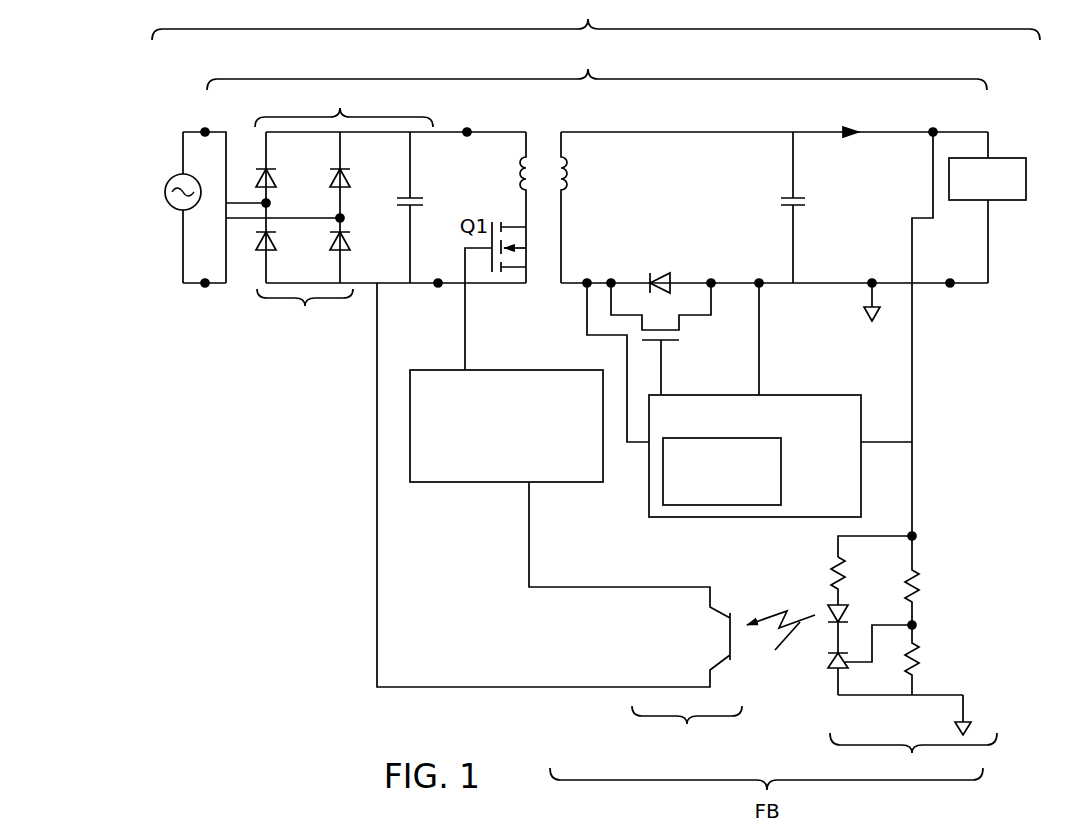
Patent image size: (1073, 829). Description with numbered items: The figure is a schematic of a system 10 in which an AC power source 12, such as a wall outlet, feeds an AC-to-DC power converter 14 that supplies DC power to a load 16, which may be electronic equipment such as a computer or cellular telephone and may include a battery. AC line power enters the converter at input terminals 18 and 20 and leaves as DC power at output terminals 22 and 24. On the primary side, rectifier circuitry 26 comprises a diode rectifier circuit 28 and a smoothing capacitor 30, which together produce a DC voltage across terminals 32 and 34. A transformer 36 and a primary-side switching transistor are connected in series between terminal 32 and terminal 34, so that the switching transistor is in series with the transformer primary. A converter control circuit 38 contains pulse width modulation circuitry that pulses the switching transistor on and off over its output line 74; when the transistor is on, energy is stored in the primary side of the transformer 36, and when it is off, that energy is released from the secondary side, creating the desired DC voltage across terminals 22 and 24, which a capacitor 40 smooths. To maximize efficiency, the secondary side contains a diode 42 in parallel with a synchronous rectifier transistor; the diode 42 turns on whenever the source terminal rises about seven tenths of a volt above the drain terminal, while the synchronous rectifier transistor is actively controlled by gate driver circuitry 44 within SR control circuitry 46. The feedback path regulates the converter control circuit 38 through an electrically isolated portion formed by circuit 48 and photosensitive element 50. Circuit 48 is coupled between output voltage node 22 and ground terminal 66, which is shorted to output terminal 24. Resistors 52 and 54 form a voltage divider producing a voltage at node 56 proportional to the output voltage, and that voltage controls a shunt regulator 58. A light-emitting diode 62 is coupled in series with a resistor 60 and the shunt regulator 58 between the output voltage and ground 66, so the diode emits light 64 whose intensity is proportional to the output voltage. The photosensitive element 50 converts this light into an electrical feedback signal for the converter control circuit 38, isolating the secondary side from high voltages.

The system 10 is at (596, 20).
The AC power source 12 is at (170, 206).
The AC-to-DC power converter 14 is at (597, 65).
The load 16 is at (1005, 158).
The input terminal 18 is at (205, 130).
The input terminal 20 is at (205, 289).
The output terminal 22 is at (930, 136).
The output terminal 24 is at (952, 289).
The rectifier circuitry 26 is at (344, 151).
The rectifier circuit 28 is at (304, 271).
The smoothing capacitor 30 is at (391, 208).
The terminal 32 is at (467, 136).
The terminal 34 is at (438, 281).
The transformer 36 is at (578, 170).
The converter control circuit 38 is at (468, 484).
The capacitor 40 is at (771, 192).
The diode 42 is at (664, 261).
The gate driver circuitry 44 is at (782, 480).
The SR control circuitry 46 is at (720, 518).
The circuit 48 is at (913, 656).
The photosensitive element 50 is at (559, 518).
The resistor 52 is at (919, 582).
The resistor 54 is at (920, 655).
The node 56 is at (918, 622).
The shunt regulator 58 is at (817, 665).
The resistor 60 is at (836, 572).
The light-emitting diode 62 is at (859, 606).
The light 64 is at (781, 643).
The ground terminal 66 is at (963, 705).
The output line 74 is at (466, 316).